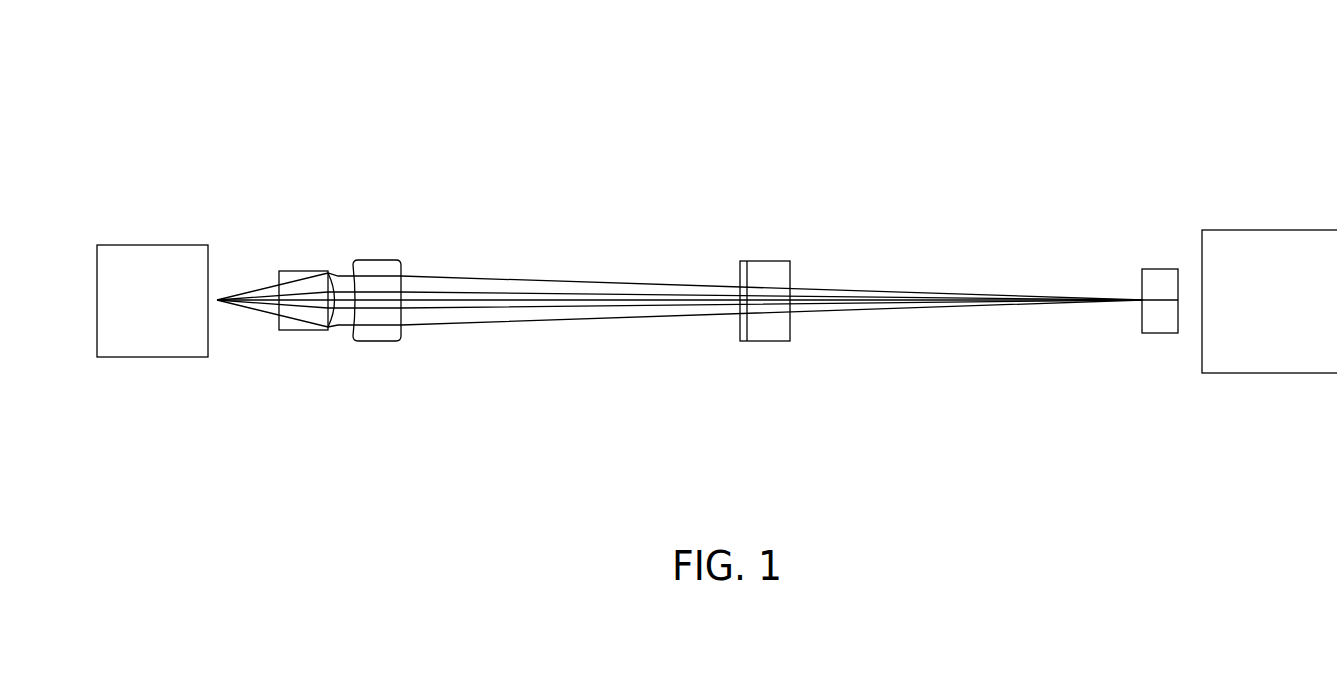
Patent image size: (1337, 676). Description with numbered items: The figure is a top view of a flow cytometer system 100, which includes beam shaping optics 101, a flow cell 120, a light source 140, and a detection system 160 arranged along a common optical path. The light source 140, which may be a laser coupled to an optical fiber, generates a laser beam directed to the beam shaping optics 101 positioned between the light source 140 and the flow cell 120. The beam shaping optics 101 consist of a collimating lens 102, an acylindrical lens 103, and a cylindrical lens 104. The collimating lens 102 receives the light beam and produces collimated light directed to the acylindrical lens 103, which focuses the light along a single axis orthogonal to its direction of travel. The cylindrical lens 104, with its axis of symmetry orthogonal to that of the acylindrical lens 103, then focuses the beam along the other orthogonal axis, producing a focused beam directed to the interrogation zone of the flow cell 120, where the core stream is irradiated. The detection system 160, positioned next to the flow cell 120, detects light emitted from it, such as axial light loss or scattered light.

The flow cytometer system 100 is at (744, 106).
The beam shaping optics 101 is at (807, 350).
The collimating lens 102 is at (303, 271).
The acylindrical lens 103 is at (382, 262).
The cylindrical lens 104 is at (777, 261).
The flow cell 120 is at (1155, 268).
The light source 140 is at (152, 301).
The detection system 160 is at (1269, 301).